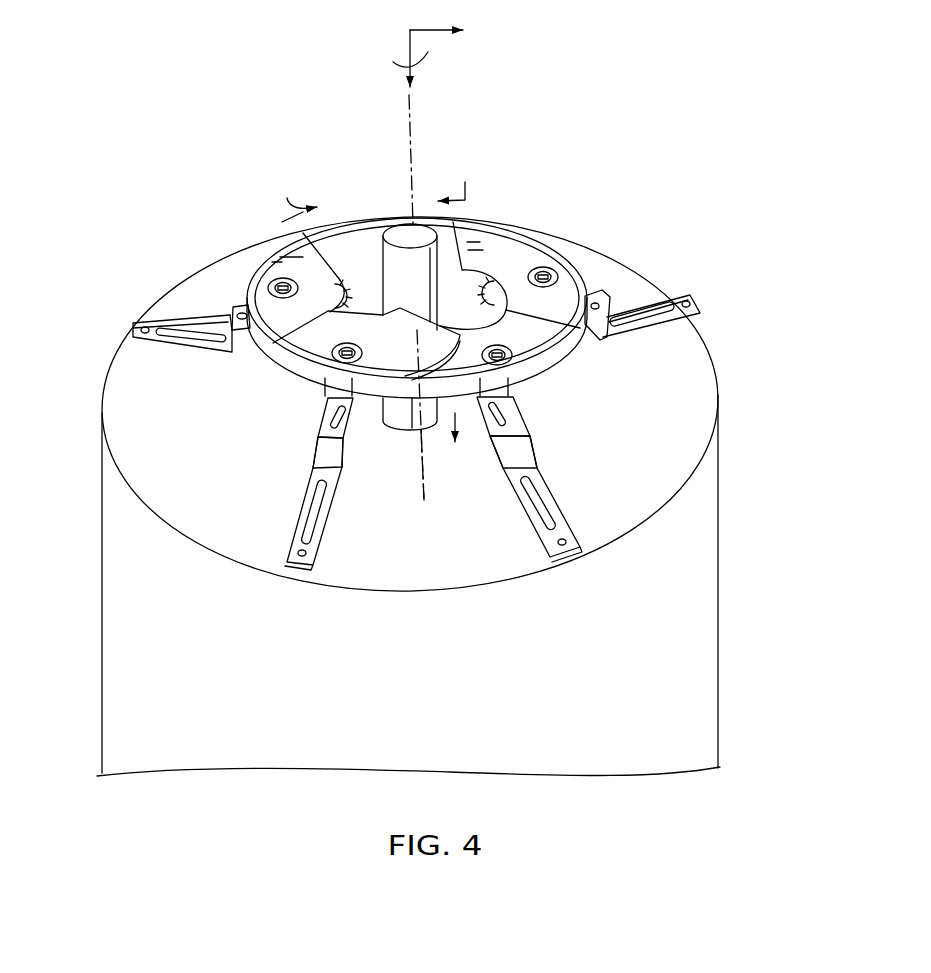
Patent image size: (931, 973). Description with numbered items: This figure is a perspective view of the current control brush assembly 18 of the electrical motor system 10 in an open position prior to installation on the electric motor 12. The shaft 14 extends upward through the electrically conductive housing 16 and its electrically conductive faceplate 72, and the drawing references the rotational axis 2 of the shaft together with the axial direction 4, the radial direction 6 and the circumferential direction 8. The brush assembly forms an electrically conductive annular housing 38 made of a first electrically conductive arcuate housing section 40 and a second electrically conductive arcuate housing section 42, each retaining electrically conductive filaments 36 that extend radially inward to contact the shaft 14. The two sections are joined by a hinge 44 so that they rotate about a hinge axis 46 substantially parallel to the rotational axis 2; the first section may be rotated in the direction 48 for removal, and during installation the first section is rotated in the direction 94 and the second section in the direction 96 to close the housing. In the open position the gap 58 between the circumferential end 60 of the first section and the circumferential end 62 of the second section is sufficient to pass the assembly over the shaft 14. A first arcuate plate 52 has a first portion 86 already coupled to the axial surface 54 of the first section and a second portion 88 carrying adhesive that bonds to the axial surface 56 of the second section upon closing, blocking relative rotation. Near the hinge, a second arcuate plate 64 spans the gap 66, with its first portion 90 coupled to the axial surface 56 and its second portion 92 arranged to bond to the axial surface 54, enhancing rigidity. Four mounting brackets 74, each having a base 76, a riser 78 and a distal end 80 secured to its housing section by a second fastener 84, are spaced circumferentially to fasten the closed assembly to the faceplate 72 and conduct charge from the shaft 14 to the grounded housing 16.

The rotational axis 2 is at (439, 297).
The axial direction 4 is at (396, 43).
The radial direction 6 is at (441, 15).
The circumferential direction 8 is at (426, 68).
The electrical motor system 10 is at (79, 570).
The electric motor 12 is at (428, 492).
The shaft 14 is at (401, 299).
The electrically conductive housing 16 is at (743, 581).
The current control brush assembly 18 is at (500, 366).
The electrically conductive filaments 36 is at (480, 275).
The electrically conductive annular housing 38 is at (242, 275).
The first electrically conductive arcuate housing section 40 is at (572, 351).
The second electrically conductive arcuate housing section 42 is at (263, 239).
The hinge 44 is at (536, 424).
The hinge axis 46 is at (451, 492).
The direction of rotation of first housing section 48 is at (469, 446).
The first arcuate plate 52 is at (556, 236).
The axial surface of first arcuate housing section 54 is at (608, 395).
The axial surface of second arcuate housing section 56 is at (215, 241).
The gap 58 is at (417, 235).
The circumferential end of first arcuate housing section 60 is at (417, 277).
The circumferential end of second arcuate housing section 62 is at (327, 228).
The second arcuate plate 64 is at (406, 409).
The gap 66 is at (407, 429).
The electrically conductive faceplate 72 is at (722, 375).
The mounting brackets 74 is at (421, 440).
The base 76 is at (437, 413).
The riser 78 is at (444, 389).
The distal end 80 is at (432, 340).
The second fastener 84 is at (413, 306).
The first portion of first arcuate plate 86 is at (443, 311).
The second portion of first arcuate plate 88 is at (489, 209).
The first portion of second arcuate plate 90 is at (303, 363).
The second portion of second arcuate plate 92 is at (414, 303).
The direction of rotation of first housing section 94 is at (459, 177).
The direction of rotation of second housing section 96 is at (296, 195).